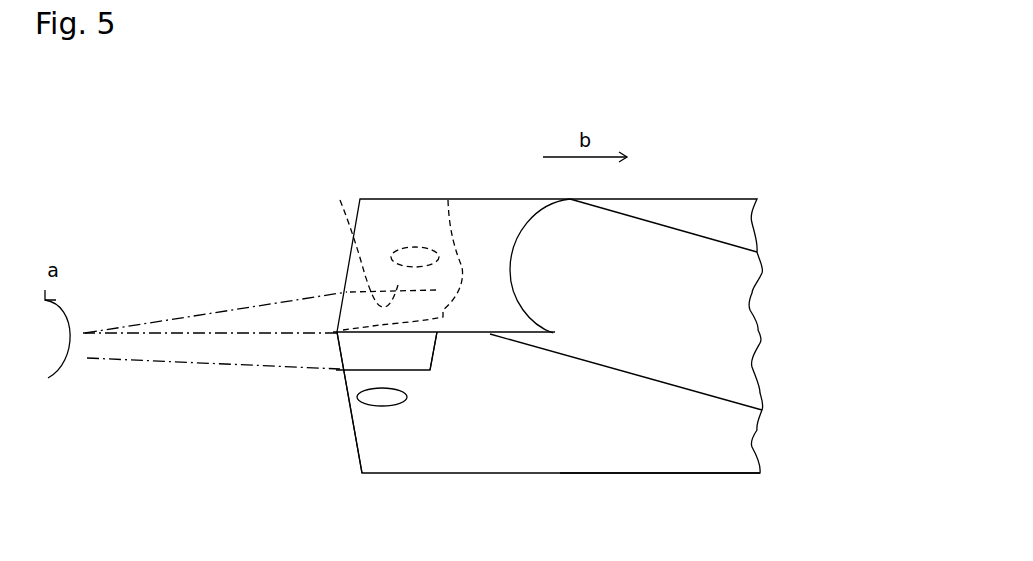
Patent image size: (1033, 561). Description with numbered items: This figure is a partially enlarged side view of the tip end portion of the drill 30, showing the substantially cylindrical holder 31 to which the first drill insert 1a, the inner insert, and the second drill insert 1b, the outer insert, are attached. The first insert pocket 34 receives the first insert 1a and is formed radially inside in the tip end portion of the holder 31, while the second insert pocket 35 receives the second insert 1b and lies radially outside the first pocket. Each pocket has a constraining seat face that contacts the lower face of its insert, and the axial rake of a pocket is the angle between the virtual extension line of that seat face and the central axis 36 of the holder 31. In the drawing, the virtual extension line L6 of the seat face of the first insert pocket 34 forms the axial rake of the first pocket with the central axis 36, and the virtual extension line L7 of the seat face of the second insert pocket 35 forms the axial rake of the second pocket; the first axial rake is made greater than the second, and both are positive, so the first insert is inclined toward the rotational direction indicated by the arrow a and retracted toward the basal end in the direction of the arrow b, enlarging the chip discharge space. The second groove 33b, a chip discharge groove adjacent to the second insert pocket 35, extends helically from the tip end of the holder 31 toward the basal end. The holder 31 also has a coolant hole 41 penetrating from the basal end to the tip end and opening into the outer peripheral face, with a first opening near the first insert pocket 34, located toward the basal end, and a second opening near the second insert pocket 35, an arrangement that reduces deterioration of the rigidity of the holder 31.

The drill 30 is at (770, 188).
The holder 31 is at (688, 473).
The second groove 33b is at (713, 317).
The first insert pocket 34 is at (340, 200).
The second insert pocket 35 is at (373, 355).
The central axis 36 is at (243, 330).
The coolant hole 41 is at (405, 247).
The first drill insert 1a is at (448, 200).
The second drill insert 1b is at (436, 352).
The virtual extension line L6 is at (280, 302).
The virtual extension line L7 is at (282, 370).